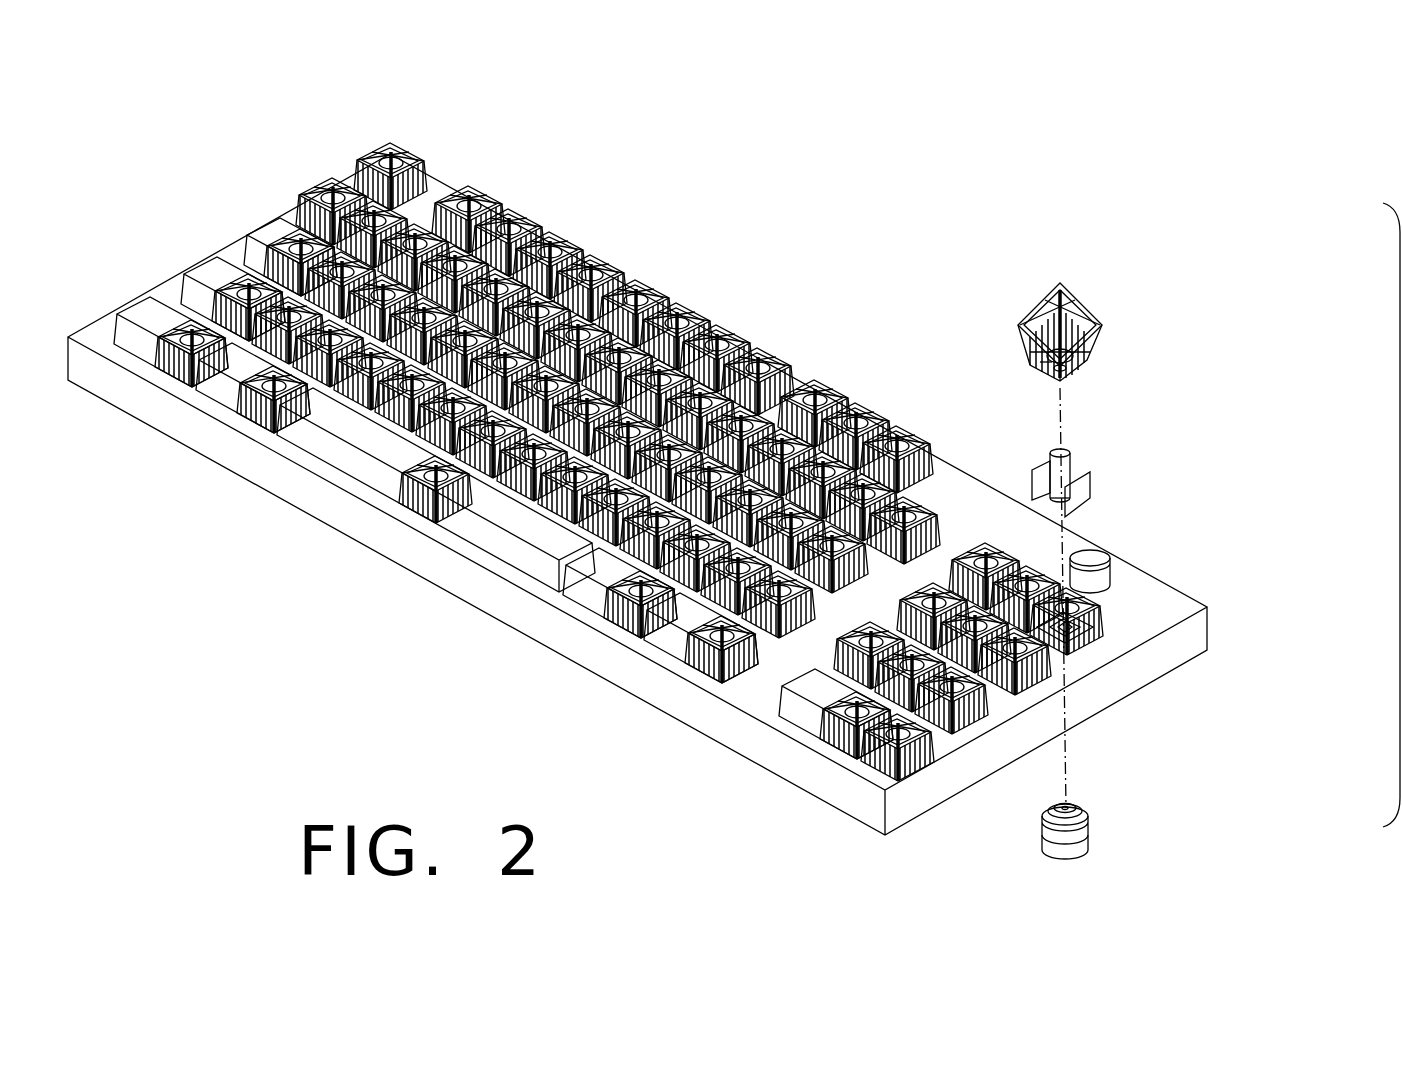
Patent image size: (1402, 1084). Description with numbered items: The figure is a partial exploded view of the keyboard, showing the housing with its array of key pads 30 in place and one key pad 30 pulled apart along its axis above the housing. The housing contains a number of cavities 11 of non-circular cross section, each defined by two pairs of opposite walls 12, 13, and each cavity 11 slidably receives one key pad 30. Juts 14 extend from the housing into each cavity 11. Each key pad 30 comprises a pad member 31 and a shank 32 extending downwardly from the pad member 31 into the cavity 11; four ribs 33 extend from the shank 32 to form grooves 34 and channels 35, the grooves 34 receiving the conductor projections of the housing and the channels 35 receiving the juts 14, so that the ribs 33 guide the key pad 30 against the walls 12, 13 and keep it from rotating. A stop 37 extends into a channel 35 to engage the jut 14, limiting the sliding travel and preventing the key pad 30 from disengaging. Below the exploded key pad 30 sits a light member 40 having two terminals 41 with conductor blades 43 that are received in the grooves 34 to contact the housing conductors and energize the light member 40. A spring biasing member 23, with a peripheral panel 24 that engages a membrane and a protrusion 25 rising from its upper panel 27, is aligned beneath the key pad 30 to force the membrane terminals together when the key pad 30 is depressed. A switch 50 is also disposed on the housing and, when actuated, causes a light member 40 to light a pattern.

The cavity 11 is at (1215, 617).
The wall 12 is at (1058, 632).
The wall 13 is at (1098, 627).
The jut 14 is at (1077, 632).
The spring biasing member 23 is at (1088, 838).
The peripheral panel 24 is at (1062, 845).
The protrusion 25 is at (1074, 808).
The upper panel 27 is at (1046, 818).
The key pad 30 is at (672, 424).
The pad member 31 is at (1100, 305).
The shank 32 is at (1038, 350).
The rib 33 is at (1092, 340).
The groove 34 is at (1085, 372).
The channel 35 is at (1050, 378).
The stop 37 is at (1045, 364).
The light member 40 is at (1075, 455).
The terminal 41 is at (1058, 520).
The conductor blade 43 is at (1040, 478).
The switch 50 is at (1102, 578).